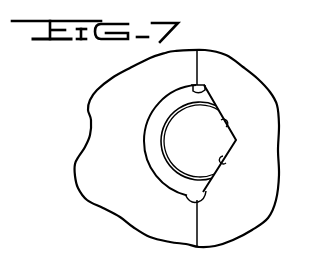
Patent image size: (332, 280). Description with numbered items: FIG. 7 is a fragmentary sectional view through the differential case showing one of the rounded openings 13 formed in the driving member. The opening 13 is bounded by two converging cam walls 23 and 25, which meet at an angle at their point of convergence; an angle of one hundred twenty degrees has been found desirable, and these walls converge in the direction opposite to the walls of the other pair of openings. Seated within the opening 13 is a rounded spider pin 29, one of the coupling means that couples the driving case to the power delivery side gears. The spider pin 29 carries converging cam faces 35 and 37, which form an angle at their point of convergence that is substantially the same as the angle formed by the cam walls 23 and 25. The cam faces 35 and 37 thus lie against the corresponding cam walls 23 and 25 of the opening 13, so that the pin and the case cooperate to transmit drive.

The rounded opening 13 is at (185, 185).
The cam wall 23 is at (196, 85).
The cam wall 25 is at (212, 186).
The spider pin 29 is at (206, 152).
The cam face 35 is at (226, 125).
The cam face 37 is at (225, 163).